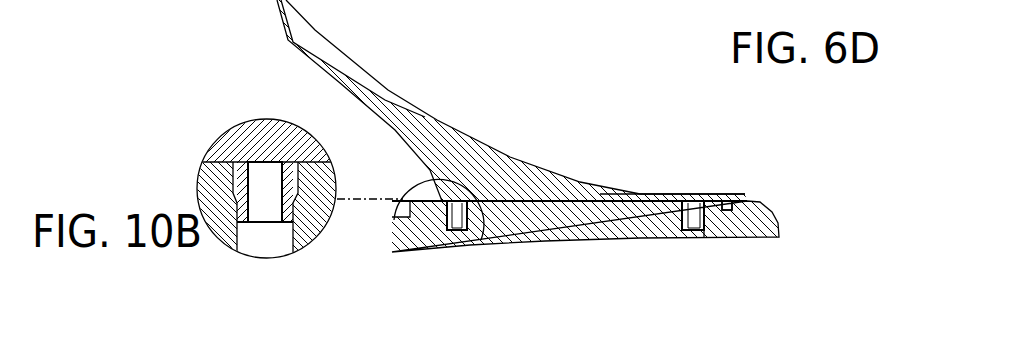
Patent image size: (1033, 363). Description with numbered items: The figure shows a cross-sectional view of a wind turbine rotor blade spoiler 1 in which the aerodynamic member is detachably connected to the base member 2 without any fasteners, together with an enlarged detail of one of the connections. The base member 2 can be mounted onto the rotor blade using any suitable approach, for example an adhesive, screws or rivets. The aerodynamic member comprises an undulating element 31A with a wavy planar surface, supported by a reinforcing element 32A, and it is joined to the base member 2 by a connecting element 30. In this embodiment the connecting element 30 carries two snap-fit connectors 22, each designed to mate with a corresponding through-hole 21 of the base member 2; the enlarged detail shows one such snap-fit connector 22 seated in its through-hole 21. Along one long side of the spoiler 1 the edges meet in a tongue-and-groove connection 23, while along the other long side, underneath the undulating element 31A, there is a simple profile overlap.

In FIG. 6D, the spoiler 1 is at (667, 100).
In FIG. 6D, the base member 2 is at (781, 222).
In FIG. 6D, the through-hole 21 is at (453, 238).
In FIG. 10B, the through-hole 21 is at (283, 232).
In FIG. 6D, the snap-fit connector 22 is at (440, 198).
In FIG. 10B, the snap-fit connector 22 is at (260, 212).
In FIG. 6D, the tongue-and-groove connection 23 is at (720, 194).
In FIG. 6D, the connecting element 30 is at (665, 193).
In FIG. 6D, the undulating element 31A is at (313, 38).
In FIG. 6D, the reinforcing element 32A is at (414, 152).